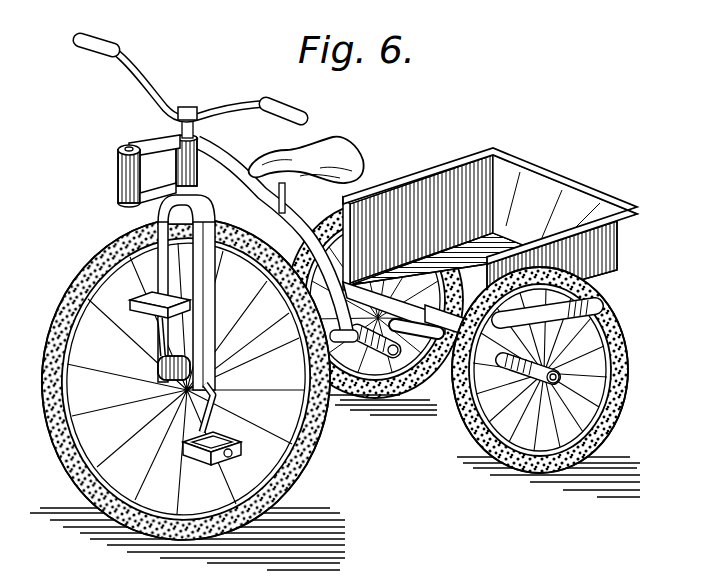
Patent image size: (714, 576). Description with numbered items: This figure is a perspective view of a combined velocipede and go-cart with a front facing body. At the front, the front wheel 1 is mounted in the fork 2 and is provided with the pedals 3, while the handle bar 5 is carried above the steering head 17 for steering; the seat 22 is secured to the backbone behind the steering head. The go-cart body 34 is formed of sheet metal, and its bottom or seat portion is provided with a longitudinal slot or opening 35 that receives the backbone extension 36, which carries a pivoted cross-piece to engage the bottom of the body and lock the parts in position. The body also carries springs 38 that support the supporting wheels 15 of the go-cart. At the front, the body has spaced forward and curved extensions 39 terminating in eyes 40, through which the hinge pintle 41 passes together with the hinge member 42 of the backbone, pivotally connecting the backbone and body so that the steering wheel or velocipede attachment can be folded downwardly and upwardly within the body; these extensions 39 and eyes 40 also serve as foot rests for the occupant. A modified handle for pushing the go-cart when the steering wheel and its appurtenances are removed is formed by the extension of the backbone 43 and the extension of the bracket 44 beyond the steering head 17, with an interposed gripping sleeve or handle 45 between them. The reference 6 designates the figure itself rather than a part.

The front wheel 1 is at (58, 303).
The fork 2 is at (210, 314).
The pedals 3 is at (132, 304).
The handle bar 5 is at (148, 81).
The cargo box body 6 is at (490, 219).
The supporting wheels 15 is at (627, 361).
The steering head 17 is at (203, 151).
The seat 22 is at (328, 144).
The body 34 is at (567, 200).
The longitudinal slot or opening 35 is at (450, 321).
The backbone extension 36 is at (394, 308).
The springs 38 is at (587, 317).
The forward and curved extensions 39 is at (421, 345).
The eyes 40 is at (367, 363).
The hinge pintle 41 is at (387, 392).
The hinge member 42 is at (340, 330).
The extension of the backbone 43 is at (147, 197).
The extension of the bracket 44 is at (152, 140).
The gripping sleeve or handle 45 is at (118, 177).